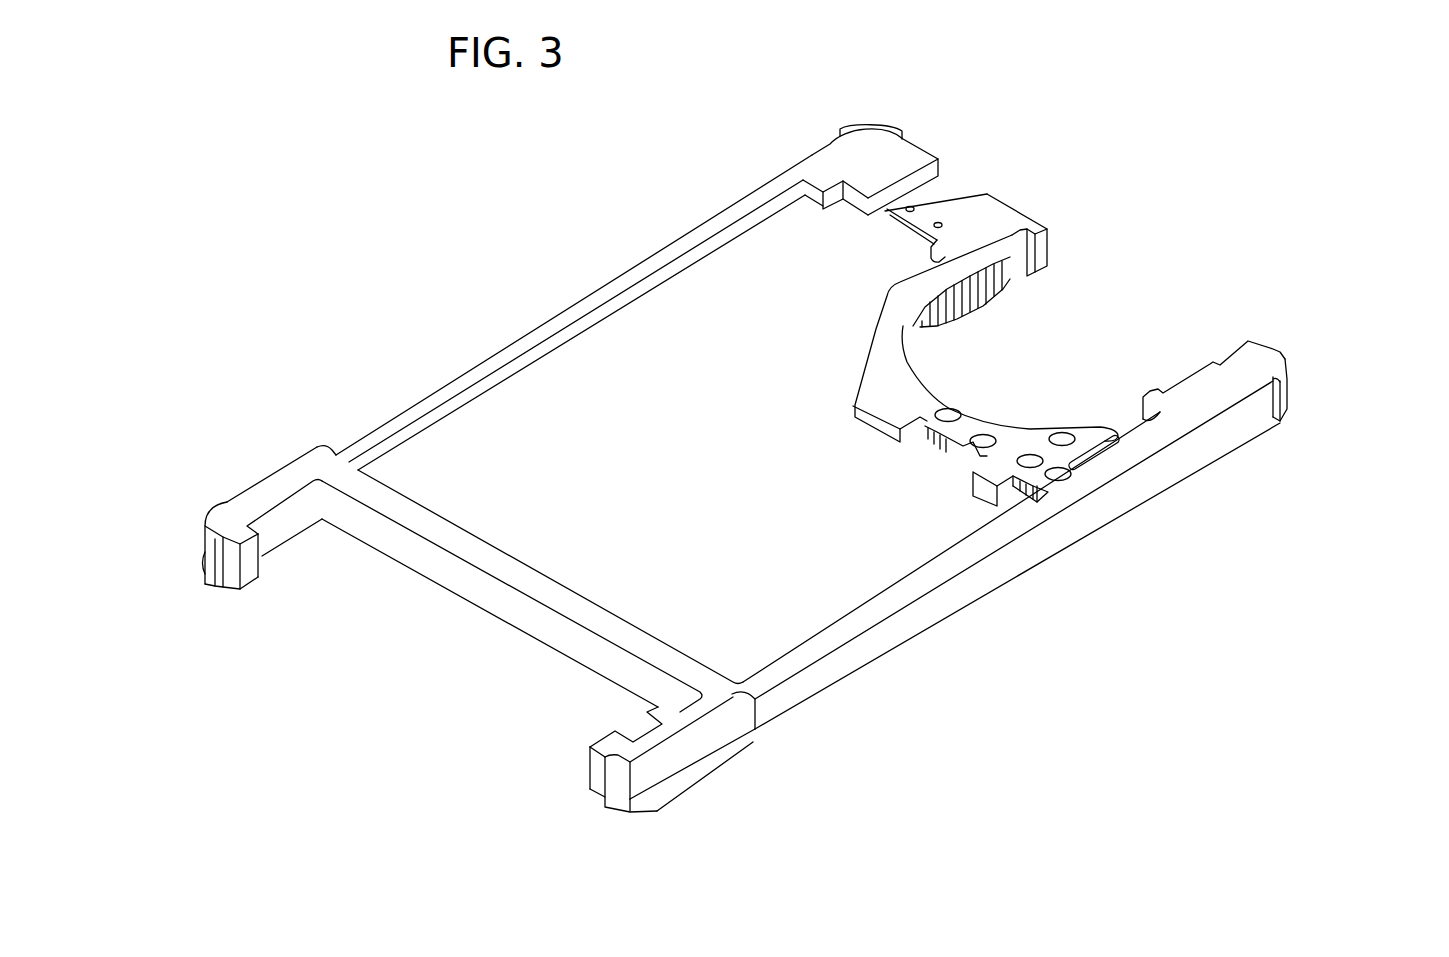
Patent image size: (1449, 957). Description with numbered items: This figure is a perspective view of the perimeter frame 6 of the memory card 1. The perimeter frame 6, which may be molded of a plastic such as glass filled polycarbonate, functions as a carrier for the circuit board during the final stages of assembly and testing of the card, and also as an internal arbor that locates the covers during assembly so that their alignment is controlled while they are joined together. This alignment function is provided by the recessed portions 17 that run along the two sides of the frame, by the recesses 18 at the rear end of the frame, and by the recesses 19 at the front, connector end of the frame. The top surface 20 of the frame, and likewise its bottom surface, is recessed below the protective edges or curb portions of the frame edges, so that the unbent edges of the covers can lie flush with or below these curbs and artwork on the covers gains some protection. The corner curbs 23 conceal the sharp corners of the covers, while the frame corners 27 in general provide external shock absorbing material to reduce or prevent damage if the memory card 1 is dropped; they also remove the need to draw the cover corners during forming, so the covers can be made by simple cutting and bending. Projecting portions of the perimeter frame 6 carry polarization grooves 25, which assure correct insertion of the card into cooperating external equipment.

The memory card 1 is at (271, 510).
The perimeter frame 6 is at (583, 234).
The recessed portions 17 is at (403, 403).
The recesses 18 is at (936, 166).
The recesses 19 is at (224, 592).
The top surface 20 is at (717, 228).
The corner curbs 23 is at (903, 127).
The polarization grooves 25 is at (680, 748).
The frame corners 27 is at (630, 812).